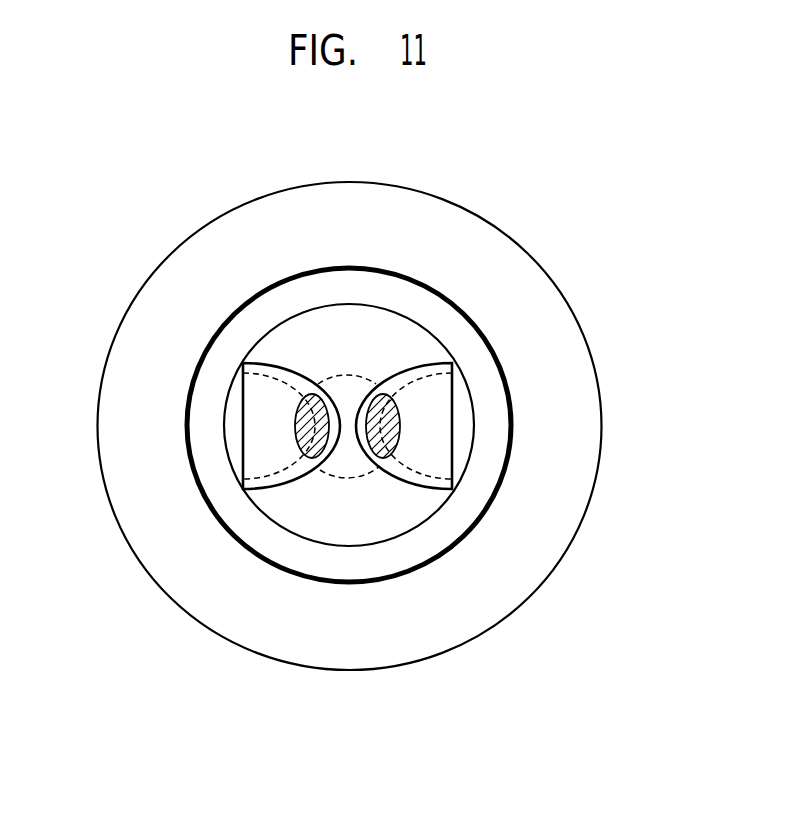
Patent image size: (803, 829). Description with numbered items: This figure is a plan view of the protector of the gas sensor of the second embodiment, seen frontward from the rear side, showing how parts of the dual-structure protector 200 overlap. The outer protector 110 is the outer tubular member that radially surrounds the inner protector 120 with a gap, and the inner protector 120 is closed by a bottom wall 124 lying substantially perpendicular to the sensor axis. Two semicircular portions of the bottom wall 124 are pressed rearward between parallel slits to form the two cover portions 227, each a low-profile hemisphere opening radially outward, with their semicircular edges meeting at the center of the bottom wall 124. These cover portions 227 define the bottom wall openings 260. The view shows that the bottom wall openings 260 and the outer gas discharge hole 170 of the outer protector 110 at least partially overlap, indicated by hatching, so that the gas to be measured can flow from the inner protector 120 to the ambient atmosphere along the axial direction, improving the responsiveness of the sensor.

The cylindrical body assembly 200 is at (410, 426).
The outer protector 110 is at (573, 312).
The inner protector 120 is at (473, 320).
The bottom wall 124 is at (418, 498).
The cover portions 227 is at (287, 365).
The outer gas discharge hole 170 is at (376, 468).
The bottom wall openings 260 is at (263, 445).